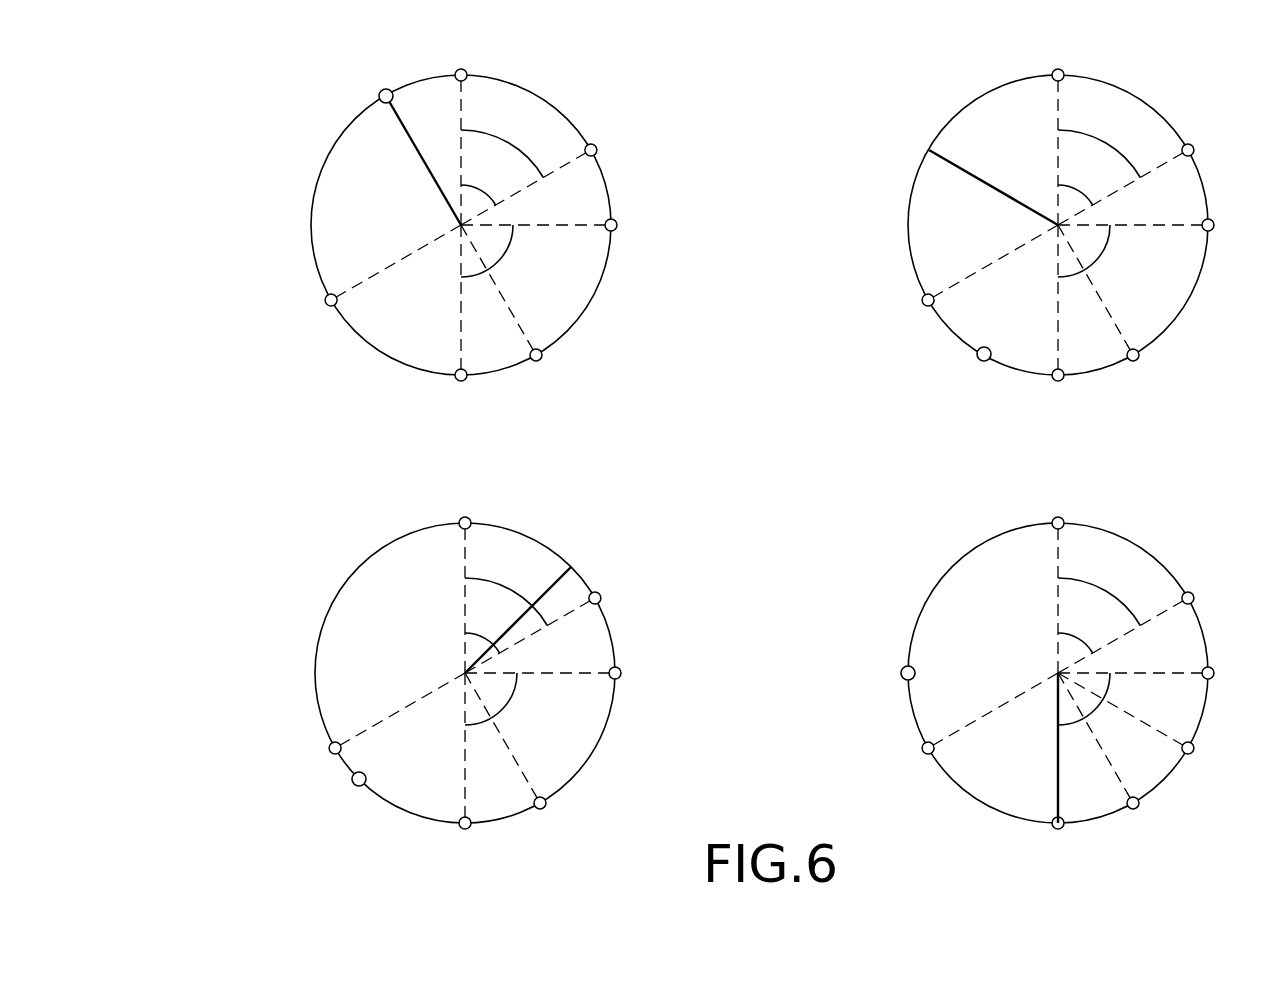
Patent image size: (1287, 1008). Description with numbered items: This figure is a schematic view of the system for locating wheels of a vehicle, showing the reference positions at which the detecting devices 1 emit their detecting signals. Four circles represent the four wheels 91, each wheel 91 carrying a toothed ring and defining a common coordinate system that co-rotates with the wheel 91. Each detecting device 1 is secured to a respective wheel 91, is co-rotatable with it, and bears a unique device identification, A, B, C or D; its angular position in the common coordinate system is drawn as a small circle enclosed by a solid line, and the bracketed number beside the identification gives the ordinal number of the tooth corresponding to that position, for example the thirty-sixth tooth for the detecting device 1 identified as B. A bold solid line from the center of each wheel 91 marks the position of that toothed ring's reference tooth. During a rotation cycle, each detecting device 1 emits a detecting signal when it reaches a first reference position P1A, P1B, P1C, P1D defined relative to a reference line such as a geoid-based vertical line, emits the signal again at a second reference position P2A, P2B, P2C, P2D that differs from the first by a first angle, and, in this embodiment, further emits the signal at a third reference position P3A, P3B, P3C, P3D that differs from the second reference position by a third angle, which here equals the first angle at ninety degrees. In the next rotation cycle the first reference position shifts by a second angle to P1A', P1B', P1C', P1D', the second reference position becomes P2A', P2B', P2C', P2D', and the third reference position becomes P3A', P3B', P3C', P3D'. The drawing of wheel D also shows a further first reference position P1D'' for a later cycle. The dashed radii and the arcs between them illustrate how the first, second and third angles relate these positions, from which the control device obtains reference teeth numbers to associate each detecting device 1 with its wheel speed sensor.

The detecting device 1 is at (379, 94).
The wheel 91 is at (311, 228).
The first reference position P1A is at (461, 132).
The second reference position P2A is at (567, 227).
The third reference position P3A is at (461, 319).
The first reference position P1A' is at (564, 178).
The second reference position P2A' is at (533, 309).
The third reference position P3A' is at (364, 279).
The first reference position P1B is at (1058, 132).
The second reference position P2B is at (1163, 227).
The third reference position P3B is at (1058, 319).
The first reference position P1B' is at (1161, 176).
The second reference position P2B' is at (1130, 309).
The third reference position P3B' is at (962, 269).
The first reference position P1C is at (465, 581).
The second reference position P2C is at (570, 675).
The third reference position P3C is at (465, 768).
The first reference position P1C' is at (566, 624).
The second reference position P2C' is at (529, 757).
The third reference position P3C' is at (366, 713).
The first reference position P1D is at (1058, 581).
The second reference position P2D is at (1163, 675).
The third reference position P3D is at (1058, 768).
The first reference position P1D' is at (1160, 624).
The second reference position P2D' is at (1131, 757).
The third reference position P3D' is at (966, 729).
The second rotated first position point D P1D'' is at (1162, 723).